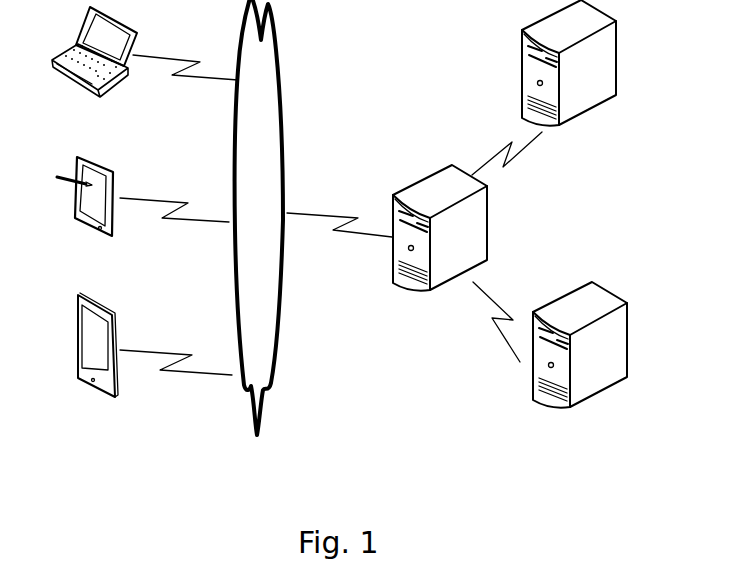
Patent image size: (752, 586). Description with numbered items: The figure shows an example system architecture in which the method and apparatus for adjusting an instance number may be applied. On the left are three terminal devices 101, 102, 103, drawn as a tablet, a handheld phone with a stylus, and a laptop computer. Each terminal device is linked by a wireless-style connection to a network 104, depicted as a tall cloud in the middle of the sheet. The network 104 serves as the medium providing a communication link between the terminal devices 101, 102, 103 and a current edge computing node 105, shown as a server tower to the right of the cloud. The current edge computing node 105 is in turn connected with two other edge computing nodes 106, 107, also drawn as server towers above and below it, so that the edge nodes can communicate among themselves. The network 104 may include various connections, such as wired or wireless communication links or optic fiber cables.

The terminal device 101 is at (97, 366).
The terminal device 102 is at (85, 215).
The terminal device 103 is at (94, 68).
The network 104 is at (259, 217).
The current edge computing node 105 is at (440, 245).
The other edge computing node 106 is at (569, 82).
The other edge computing node 107 is at (580, 361).